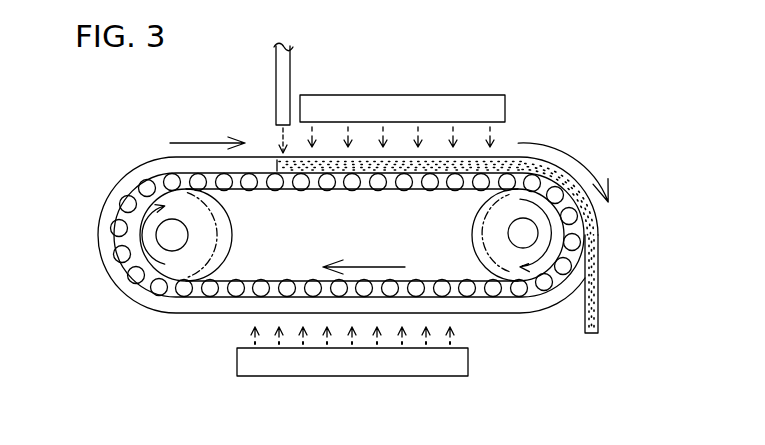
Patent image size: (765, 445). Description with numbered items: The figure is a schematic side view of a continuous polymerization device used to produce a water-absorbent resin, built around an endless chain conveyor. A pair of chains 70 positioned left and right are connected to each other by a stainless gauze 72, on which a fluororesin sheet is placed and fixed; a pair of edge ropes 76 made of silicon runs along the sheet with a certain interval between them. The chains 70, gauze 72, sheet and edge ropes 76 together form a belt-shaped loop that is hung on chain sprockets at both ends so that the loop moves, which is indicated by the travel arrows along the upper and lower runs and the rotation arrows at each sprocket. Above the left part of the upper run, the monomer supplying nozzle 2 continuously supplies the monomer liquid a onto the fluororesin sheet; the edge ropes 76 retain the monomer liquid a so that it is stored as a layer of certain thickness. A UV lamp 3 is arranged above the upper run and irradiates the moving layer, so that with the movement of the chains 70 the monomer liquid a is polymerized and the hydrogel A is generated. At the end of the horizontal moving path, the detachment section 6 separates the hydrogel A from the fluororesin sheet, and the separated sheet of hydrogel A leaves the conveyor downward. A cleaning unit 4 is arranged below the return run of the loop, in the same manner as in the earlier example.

The monomer supplying nozzle 2 is at (283, 78).
The monomer liquid a is at (279, 146).
The UV lamp 3 is at (403, 110).
The cleaning unit 4 is at (355, 368).
The detachment section 6 is at (598, 233).
The chain 70 is at (306, 178).
The stainless gauze 72 is at (112, 245).
The edge ropes 76 is at (115, 280).
The hydrogel A is at (596, 293).